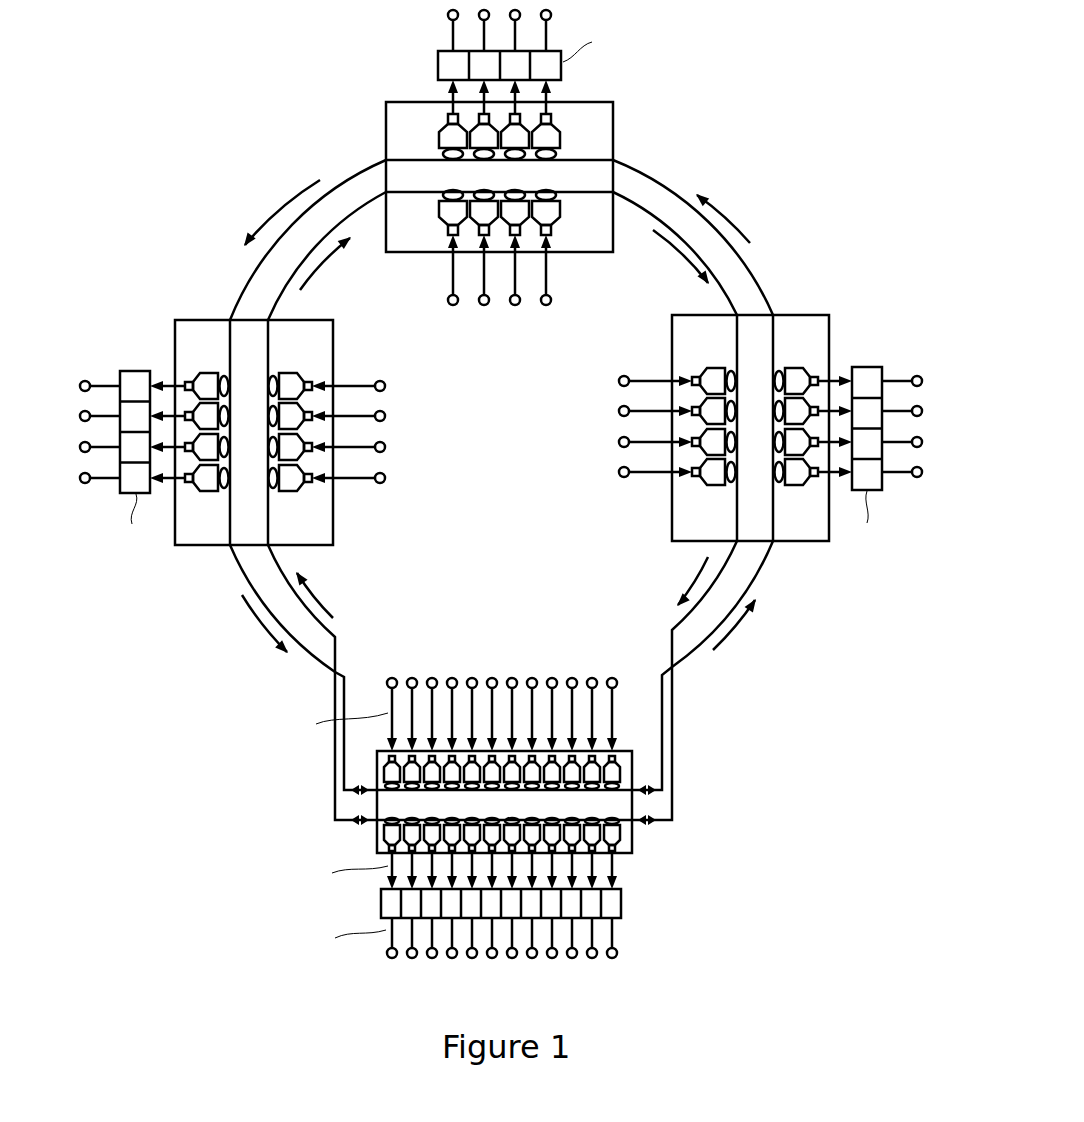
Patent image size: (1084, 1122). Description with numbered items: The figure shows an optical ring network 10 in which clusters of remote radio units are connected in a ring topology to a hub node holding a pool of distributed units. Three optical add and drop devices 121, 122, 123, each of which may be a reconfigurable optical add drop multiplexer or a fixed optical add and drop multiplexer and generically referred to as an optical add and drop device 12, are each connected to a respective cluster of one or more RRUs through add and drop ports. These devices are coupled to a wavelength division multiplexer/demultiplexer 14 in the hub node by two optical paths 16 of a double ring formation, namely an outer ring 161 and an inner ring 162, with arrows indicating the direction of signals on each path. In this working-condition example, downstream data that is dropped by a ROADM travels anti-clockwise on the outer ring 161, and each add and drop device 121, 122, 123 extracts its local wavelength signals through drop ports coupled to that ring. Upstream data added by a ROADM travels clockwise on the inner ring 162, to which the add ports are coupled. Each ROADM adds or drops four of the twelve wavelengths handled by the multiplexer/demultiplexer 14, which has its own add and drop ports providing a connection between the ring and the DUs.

The optical ring network 10 is at (788, 98).
The optical add and drop device 12 is at (498, 278).
The first optical add and drop device 121 is at (333, 527).
The second optical add and drop device 122 is at (410, 253).
The third optical add and drop device 123 is at (671, 526).
The multiplexer/demultiplexer 14 is at (632, 858).
The optical path 16 is at (503, 490).
The outer ring 161 is at (248, 585).
The inner ring 162 is at (335, 645).